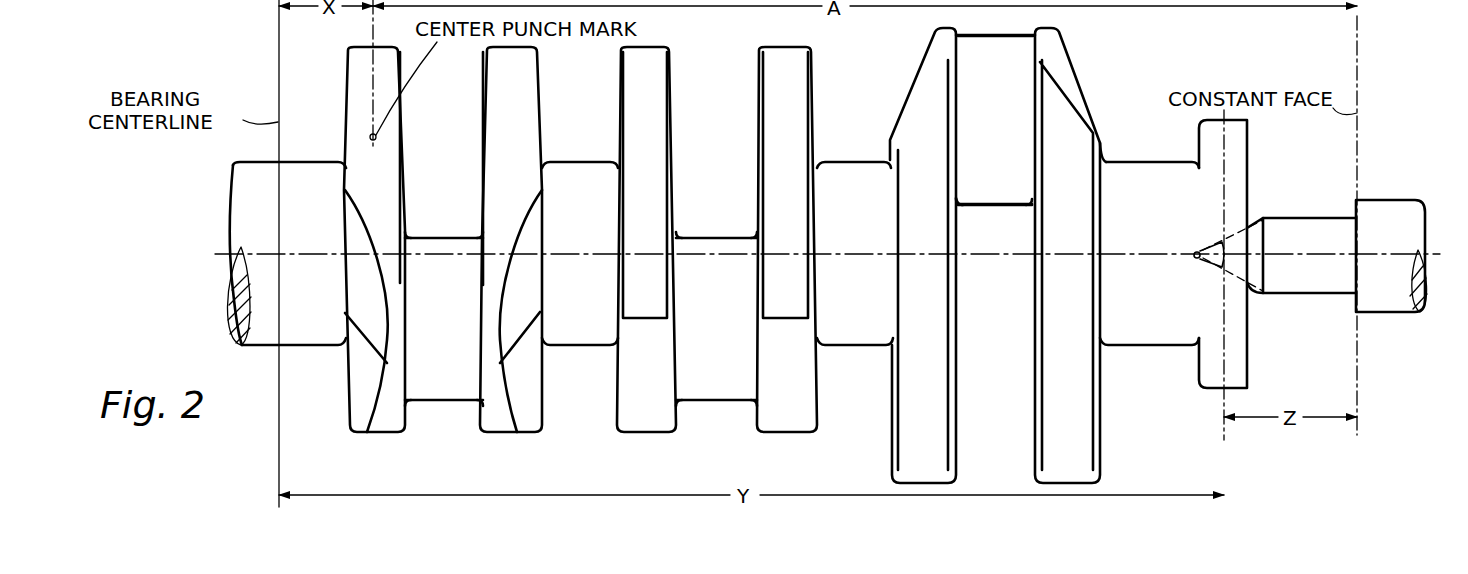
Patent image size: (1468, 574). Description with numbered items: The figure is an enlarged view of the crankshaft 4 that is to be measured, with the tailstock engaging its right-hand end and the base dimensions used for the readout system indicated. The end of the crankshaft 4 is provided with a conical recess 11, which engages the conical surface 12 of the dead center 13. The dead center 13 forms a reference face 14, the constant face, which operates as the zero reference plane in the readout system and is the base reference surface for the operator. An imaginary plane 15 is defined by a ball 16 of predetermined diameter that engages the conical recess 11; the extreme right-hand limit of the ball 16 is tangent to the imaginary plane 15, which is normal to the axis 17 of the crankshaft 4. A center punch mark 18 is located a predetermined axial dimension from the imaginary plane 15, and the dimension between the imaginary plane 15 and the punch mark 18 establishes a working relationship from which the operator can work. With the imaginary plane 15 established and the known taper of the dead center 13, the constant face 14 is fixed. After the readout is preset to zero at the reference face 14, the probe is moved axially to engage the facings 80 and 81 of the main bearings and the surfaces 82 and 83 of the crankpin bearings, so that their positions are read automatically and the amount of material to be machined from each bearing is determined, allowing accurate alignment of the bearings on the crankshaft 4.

The crankshaft 4 is at (1068, 51).
The conical recess 11 is at (1255, 239).
The conical surface 12 is at (1252, 290).
The dead center 13 is at (1307, 217).
The reference face 14 is at (1356, 308).
The imaginary plane 15 is at (1222, 318).
The ball 16 is at (1210, 247).
The axis 17 is at (1115, 254).
The center punch mark 18 is at (377, 138).
The facing of main bearing 80 is at (1199, 140).
The facing of main bearing 81 is at (1104, 150).
The surface 82 is at (1032, 232).
The surface 83 is at (962, 222).